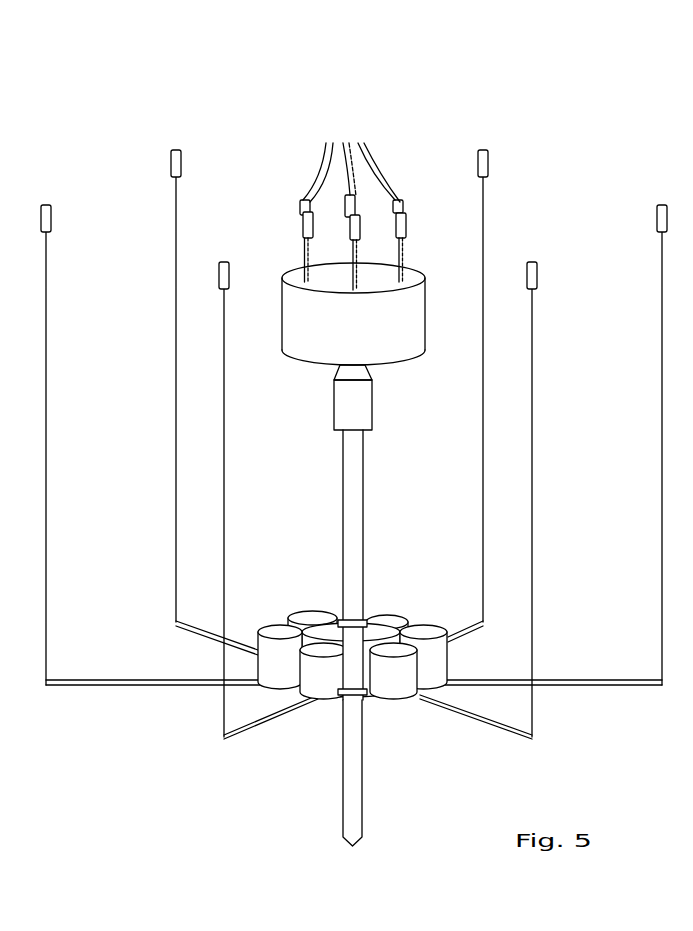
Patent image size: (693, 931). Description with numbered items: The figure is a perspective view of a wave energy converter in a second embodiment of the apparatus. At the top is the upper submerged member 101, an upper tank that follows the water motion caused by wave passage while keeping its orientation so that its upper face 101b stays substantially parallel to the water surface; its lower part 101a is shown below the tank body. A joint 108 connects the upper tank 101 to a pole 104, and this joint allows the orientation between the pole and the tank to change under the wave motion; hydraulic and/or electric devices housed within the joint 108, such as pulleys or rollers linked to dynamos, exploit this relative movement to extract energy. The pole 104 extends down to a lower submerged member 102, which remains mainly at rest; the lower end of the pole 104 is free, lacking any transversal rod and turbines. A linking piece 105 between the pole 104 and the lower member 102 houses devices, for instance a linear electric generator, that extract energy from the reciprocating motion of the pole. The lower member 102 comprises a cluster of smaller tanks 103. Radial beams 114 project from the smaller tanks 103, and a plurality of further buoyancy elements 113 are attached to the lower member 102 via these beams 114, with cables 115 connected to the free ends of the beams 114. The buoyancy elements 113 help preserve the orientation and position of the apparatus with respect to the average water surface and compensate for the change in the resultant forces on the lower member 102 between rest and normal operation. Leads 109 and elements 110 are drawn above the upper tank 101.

The upper submerged member 101 is at (427, 298).
The container bottom 101a is at (308, 362).
The upper face 101b is at (295, 275).
The lower submerged member 102 is at (333, 707).
The smaller tanks 103 is at (282, 668).
The pole 104 is at (353, 528).
The linking piece 105 is at (383, 621).
The joint 108 is at (364, 397).
The lead wires 109 is at (351, 161).
The electrodes 110 is at (410, 250).
The buoyancy elements 113 is at (220, 273).
The radial beams 114 is at (197, 637).
The cables 115 is at (224, 475).